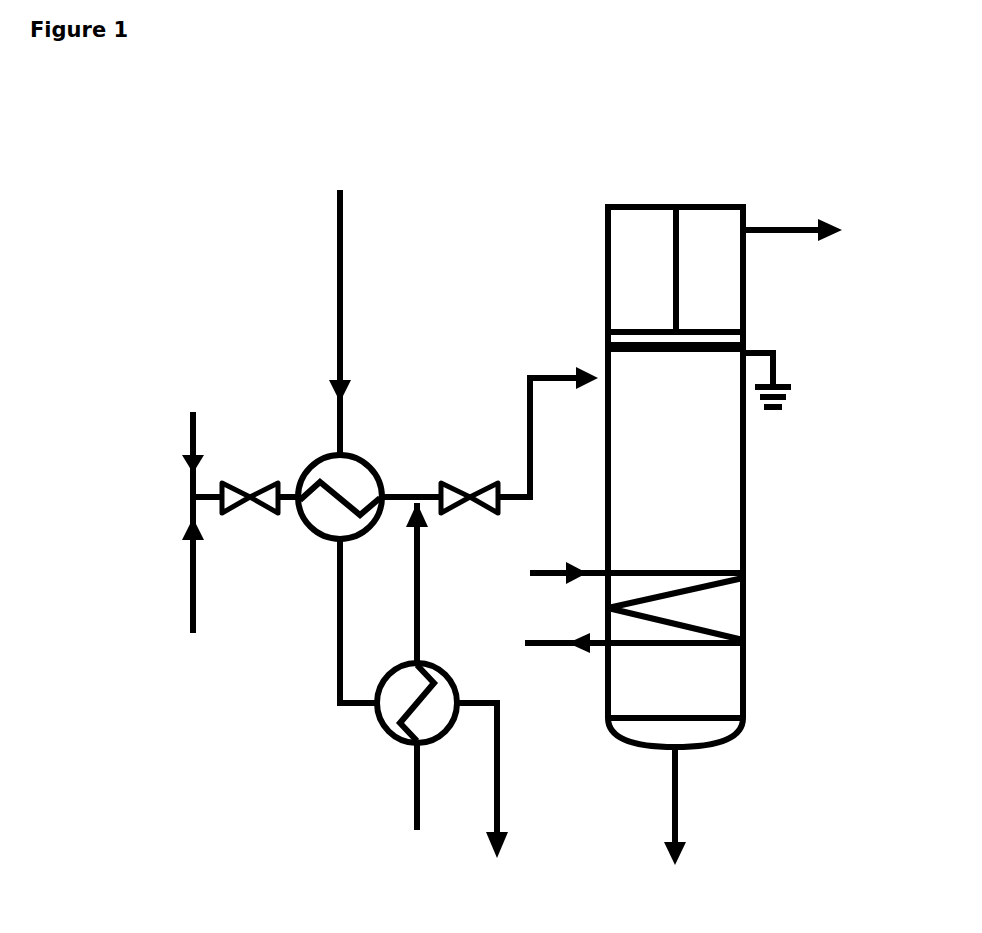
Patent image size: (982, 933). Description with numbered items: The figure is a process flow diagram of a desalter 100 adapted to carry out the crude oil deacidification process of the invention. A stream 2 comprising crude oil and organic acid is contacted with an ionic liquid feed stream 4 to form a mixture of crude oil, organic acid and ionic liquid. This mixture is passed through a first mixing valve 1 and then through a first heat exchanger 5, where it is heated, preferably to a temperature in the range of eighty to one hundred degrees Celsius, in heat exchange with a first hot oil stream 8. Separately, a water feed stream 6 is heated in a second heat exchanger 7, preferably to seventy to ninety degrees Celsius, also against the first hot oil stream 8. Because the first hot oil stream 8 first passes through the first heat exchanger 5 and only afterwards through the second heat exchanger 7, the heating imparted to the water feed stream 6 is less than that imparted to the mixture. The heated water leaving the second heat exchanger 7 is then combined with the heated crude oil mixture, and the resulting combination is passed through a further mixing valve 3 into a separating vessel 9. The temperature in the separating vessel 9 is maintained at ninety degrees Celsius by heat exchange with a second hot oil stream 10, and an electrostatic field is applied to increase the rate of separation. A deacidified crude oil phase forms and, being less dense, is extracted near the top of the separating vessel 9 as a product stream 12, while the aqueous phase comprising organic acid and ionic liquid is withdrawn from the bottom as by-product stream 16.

The desalter 100 is at (250, 172).
The first mixing valve 1 is at (233, 482).
The stream comprising crude oil and organic acid 2 is at (198, 415).
The further mixing valve 3 is at (453, 483).
The ionic liquid feed stream 4 is at (197, 582).
The first heat exchanger 5 is at (367, 460).
The water feed stream 6 is at (412, 788).
The second heat exchanger 7 is at (382, 725).
The first hot oil stream 8 is at (343, 227).
The separating vessel 9 is at (745, 522).
The second hot oil stream 10 is at (543, 570).
The product stream 12 is at (778, 235).
The by-product stream 16 is at (672, 815).